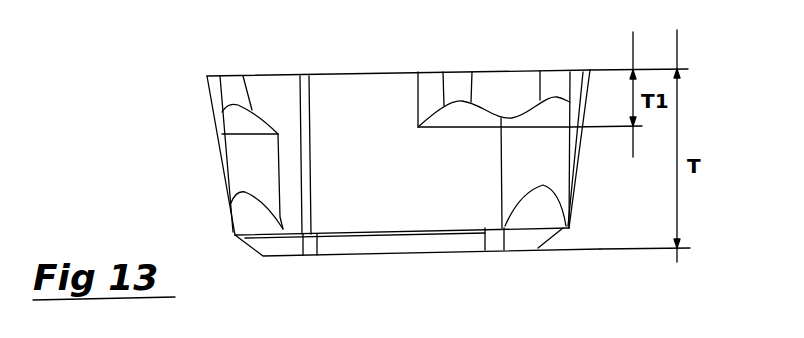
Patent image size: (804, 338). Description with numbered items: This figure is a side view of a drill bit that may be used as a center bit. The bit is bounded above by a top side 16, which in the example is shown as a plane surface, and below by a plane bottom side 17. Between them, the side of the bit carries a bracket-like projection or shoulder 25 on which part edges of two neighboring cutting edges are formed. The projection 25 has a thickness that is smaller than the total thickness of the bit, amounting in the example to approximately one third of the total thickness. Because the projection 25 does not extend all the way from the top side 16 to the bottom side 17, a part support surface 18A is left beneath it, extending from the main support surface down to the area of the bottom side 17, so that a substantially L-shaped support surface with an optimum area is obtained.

The top side 16 is at (340, 77).
The bracket-like projection 25 is at (498, 95).
The bottom side 17 is at (392, 256).
The part support surface 18A is at (477, 202).